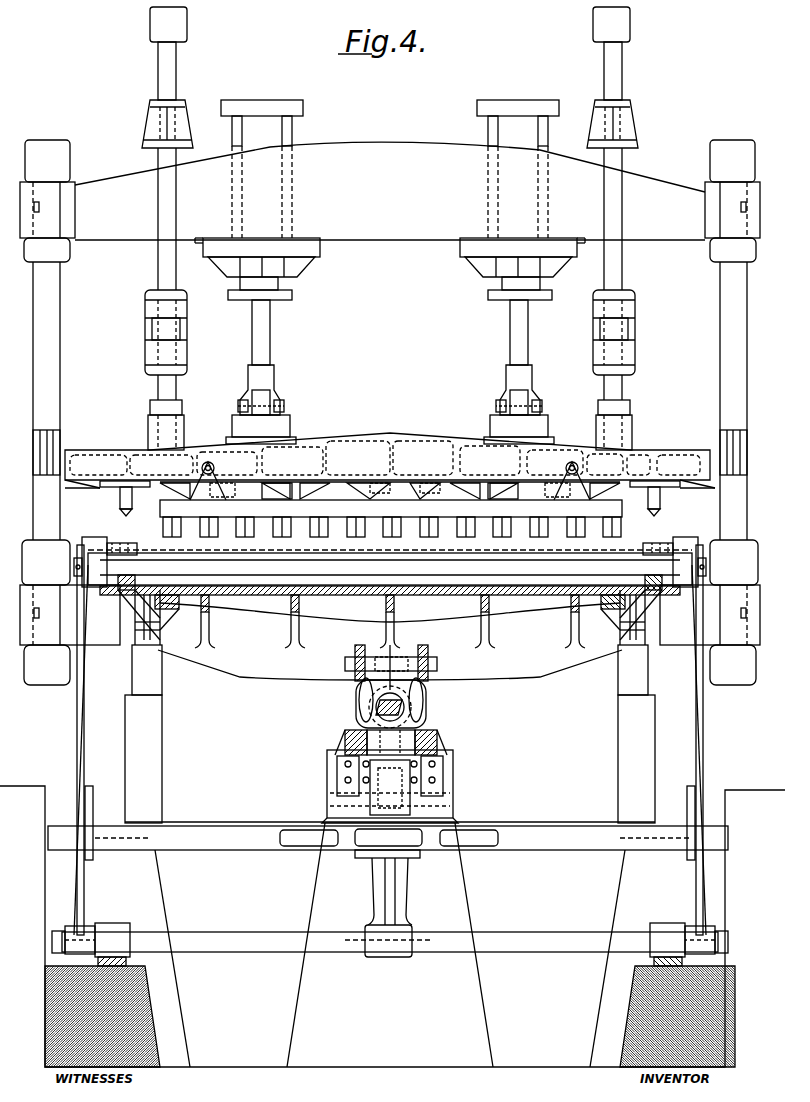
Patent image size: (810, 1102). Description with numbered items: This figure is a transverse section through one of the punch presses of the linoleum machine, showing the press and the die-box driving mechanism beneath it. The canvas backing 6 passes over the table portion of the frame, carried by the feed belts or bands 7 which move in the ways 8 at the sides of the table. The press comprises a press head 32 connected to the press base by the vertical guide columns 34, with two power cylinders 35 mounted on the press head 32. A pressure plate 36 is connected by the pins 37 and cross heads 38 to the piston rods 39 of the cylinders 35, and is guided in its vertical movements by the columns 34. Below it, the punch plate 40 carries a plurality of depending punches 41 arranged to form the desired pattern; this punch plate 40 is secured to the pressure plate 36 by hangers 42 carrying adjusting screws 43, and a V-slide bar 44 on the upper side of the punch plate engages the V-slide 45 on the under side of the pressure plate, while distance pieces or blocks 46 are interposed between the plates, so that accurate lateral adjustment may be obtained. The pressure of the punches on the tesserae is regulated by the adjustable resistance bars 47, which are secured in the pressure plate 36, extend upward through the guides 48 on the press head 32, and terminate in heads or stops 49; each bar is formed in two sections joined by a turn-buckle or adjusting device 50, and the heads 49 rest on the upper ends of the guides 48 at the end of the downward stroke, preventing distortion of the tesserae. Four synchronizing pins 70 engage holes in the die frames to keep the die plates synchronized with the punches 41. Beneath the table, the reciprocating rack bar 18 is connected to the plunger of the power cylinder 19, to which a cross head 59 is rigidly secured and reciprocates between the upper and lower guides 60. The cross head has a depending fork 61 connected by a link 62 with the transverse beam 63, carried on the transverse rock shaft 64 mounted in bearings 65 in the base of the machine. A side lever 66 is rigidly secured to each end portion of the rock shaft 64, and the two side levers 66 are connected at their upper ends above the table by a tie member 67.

The canvas backing 6 is at (357, 586).
The feed belts or bands 7 is at (150, 586).
The ways 8 is at (120, 597).
The reciprocating rack bar 18 is at (408, 703).
The power cylinder 19 is at (412, 711).
The press head 32 is at (390, 191).
The vertical guide columns 34 is at (47, 377).
The power cylinders 35 is at (294, 124).
The pressure plate 36 is at (390, 460).
The pins 37 is at (280, 401).
The cross heads 38 is at (290, 425).
The piston rods 39 is at (270, 352).
The punch plate 40 is at (445, 506).
The punches 41 is at (172, 530).
The hangers 42 is at (224, 503).
The adjusting screws 43 is at (214, 468).
The V-slide bar 44 is at (395, 502).
The V-slide 45 is at (385, 484).
The distance pieces or blocks 46 is at (355, 494).
The adjustable resistance bars 47 is at (158, 72).
The guides 48 is at (142, 124).
The heads or stops 49 is at (150, 24).
The turn-buckle or adjusting device 50 is at (148, 322).
The cross head 59 is at (356, 716).
The upper and lower guides 60 is at (346, 742).
The depending fork 61 is at (336, 772).
The link 62 is at (385, 794).
The transverse beam 63 is at (375, 852).
The transverse rock shaft 64 is at (508, 940).
The bearings 65 is at (118, 918).
The side levers 66 is at (78, 746).
The tie member 67 is at (460, 552).
The synchronizing pins 70 is at (120, 500).